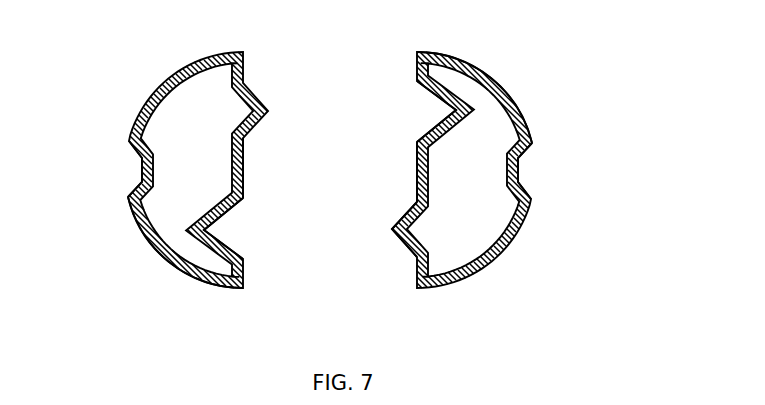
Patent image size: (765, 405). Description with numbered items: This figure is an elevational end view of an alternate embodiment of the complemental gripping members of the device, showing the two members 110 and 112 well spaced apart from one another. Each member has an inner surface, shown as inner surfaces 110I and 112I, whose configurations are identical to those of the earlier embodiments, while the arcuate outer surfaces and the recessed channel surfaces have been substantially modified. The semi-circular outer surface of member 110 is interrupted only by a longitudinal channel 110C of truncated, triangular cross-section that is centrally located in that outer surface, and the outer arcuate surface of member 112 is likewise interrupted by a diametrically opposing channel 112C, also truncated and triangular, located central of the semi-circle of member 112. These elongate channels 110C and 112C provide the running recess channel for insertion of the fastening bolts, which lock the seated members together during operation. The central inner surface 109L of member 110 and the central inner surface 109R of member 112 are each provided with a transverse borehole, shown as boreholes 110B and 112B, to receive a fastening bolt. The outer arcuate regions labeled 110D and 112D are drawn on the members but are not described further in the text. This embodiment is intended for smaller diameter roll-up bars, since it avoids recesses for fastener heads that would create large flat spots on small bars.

The complemental gripping member 110 is at (182, 72).
The transverse borehole 110B is at (231, 160).
The longitudinal channel 110C is at (140, 170).
The outer arcuate surface of left member 110D is at (167, 257).
The inner surface 110I is at (244, 147).
The central inner surface 109L is at (243, 190).
The complemental gripping member 112 is at (525, 218).
The transverse borehole 112B is at (430, 174).
The channel 112C is at (520, 170).
The outer arcuate surface of right member 112D is at (493, 82).
The inner surface 112I is at (403, 220).
The central inner surface 109R is at (417, 153).